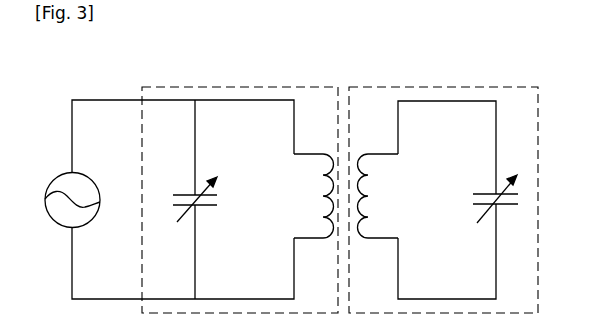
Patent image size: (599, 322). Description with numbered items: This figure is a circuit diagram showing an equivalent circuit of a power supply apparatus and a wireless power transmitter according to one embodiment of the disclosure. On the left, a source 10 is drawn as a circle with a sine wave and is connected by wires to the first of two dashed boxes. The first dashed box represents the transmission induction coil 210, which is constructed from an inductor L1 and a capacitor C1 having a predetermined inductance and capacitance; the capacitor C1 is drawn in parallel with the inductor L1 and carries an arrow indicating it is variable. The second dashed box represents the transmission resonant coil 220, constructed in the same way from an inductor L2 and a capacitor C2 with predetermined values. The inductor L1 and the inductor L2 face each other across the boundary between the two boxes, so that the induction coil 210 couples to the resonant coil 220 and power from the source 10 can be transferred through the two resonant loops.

The power source 10 is at (55, 175).
The transmission induction coil 210 is at (240, 174).
The transmission resonant coil 220 is at (443, 177).
The capacitor C1 is at (184, 199).
The inductor L1 is at (312, 196).
The inductor L2 is at (378, 196).
The capacitor C2 is at (500, 203).